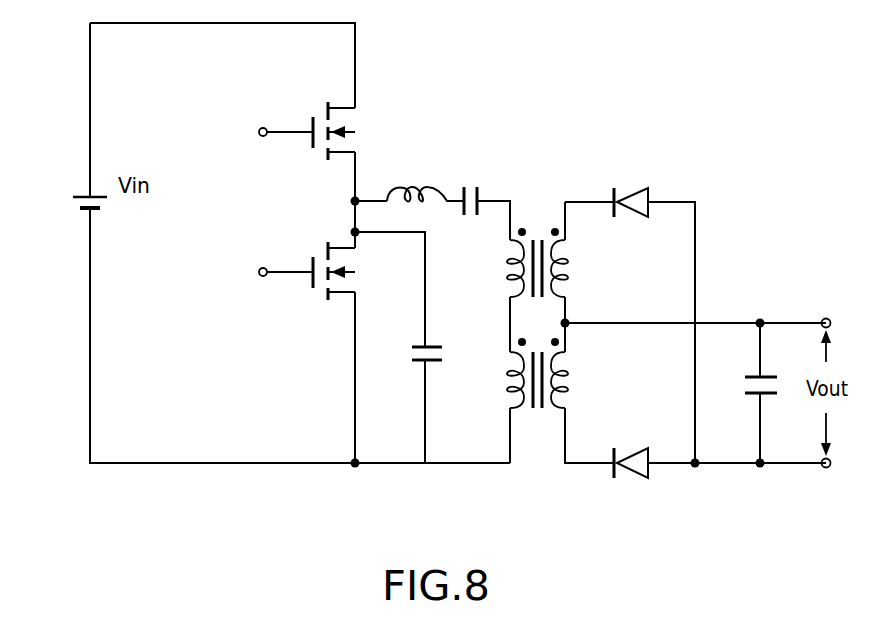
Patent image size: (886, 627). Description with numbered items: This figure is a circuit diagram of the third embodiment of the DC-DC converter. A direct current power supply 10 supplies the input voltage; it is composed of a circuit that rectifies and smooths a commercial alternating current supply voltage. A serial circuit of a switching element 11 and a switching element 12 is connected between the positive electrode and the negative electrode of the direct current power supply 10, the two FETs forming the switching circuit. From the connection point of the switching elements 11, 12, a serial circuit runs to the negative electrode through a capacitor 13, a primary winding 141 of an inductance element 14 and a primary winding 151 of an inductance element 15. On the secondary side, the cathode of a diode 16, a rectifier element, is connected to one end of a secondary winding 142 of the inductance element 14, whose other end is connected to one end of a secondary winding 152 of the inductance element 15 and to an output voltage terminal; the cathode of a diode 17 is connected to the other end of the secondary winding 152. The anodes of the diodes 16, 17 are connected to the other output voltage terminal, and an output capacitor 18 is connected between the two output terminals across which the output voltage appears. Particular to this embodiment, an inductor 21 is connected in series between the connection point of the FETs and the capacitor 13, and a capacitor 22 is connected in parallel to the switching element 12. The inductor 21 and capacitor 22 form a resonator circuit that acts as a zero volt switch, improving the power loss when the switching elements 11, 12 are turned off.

The direct current power supply 10 is at (73, 207).
The switching element 11 is at (313, 153).
The switching element 12 is at (313, 293).
The capacitor 13 is at (470, 186).
The inductance element 14 is at (544, 243).
The primary winding 141 is at (503, 271).
The secondary winding 142 is at (574, 267).
The inductance element 15 is at (544, 424).
The primary winding 151 is at (503, 383).
The secondary winding 152 is at (574, 380).
The diode 16 is at (630, 186).
The diode 17 is at (631, 480).
The output capacitor 18 is at (779, 385).
The inductor 21 is at (418, 180).
The capacitor 22 is at (410, 352).